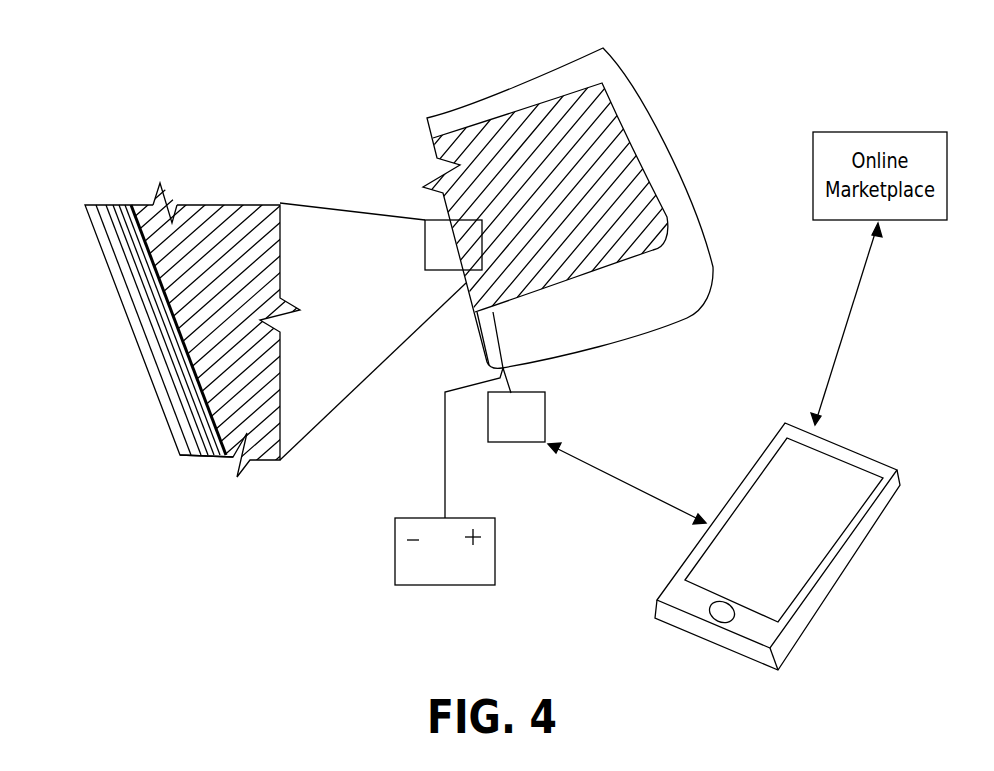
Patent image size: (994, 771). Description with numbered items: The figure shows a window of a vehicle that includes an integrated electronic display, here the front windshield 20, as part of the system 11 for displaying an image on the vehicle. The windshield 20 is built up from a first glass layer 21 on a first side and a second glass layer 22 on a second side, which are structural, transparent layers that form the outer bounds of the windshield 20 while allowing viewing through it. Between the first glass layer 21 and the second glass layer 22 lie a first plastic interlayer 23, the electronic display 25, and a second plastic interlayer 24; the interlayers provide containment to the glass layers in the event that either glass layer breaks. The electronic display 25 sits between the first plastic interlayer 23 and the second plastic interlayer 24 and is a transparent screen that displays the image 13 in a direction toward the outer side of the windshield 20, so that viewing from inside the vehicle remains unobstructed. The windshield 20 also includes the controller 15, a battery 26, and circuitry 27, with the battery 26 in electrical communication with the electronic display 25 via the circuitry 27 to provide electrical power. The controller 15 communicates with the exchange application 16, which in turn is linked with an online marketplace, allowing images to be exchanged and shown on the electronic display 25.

The system 11 is at (426, 88).
The image/advertisement 13 is at (492, 153).
The controller 15 is at (545, 422).
The exchange application 16 is at (780, 477).
The front windshield 20 is at (638, 118).
The first glass layer 21 is at (132, 203).
The second glass layer 22 is at (92, 213).
The first plastic interlayer 23 is at (120, 202).
The second plastic interlayer 24 is at (100, 203).
The electronic display 25 is at (110, 200).
The battery 26 is at (497, 568).
The circuitry 27 is at (442, 462).